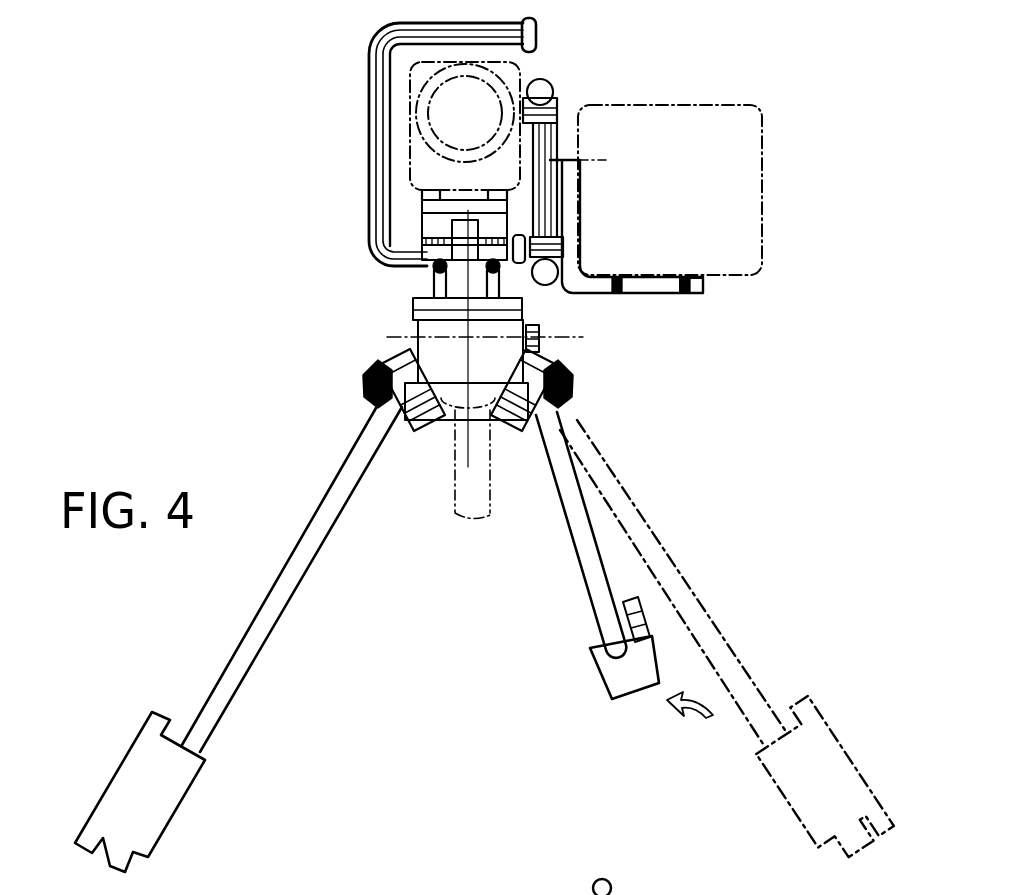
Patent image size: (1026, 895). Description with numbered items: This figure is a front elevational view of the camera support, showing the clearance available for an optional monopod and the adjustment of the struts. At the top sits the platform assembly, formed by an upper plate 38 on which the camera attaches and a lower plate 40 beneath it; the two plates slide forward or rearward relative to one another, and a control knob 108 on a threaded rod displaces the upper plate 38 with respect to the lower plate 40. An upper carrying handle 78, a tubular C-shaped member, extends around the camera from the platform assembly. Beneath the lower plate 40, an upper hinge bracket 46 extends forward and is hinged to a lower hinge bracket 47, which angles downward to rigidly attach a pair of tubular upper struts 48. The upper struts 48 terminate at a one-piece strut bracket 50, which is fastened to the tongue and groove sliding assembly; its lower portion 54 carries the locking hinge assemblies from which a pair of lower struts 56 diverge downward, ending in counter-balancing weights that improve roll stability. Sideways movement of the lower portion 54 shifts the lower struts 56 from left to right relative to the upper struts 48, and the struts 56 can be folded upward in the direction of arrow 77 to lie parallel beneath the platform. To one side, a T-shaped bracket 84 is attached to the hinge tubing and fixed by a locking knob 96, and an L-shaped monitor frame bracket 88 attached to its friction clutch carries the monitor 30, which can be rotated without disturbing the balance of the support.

The monitor 30 is at (747, 118).
The upper plate 38 is at (428, 202).
The lower plate 40 is at (430, 216).
The upper hinge bracket 46 is at (430, 226).
The lower hinge bracket 47 is at (428, 266).
The upper struts 48 is at (418, 296).
The strut bracket 50 is at (413, 313).
The lower portion of the tongue and groove sliding assembly 54 is at (538, 418).
The lower struts 56 is at (682, 593).
The arrow 77 is at (685, 712).
The upper carrying handle 78 is at (372, 57).
The T-shaped bracket 84 is at (550, 137).
The monitor frame bracket 88 is at (700, 285).
The locking knob 96 is at (542, 80).
The control knob 108 is at (540, 338).